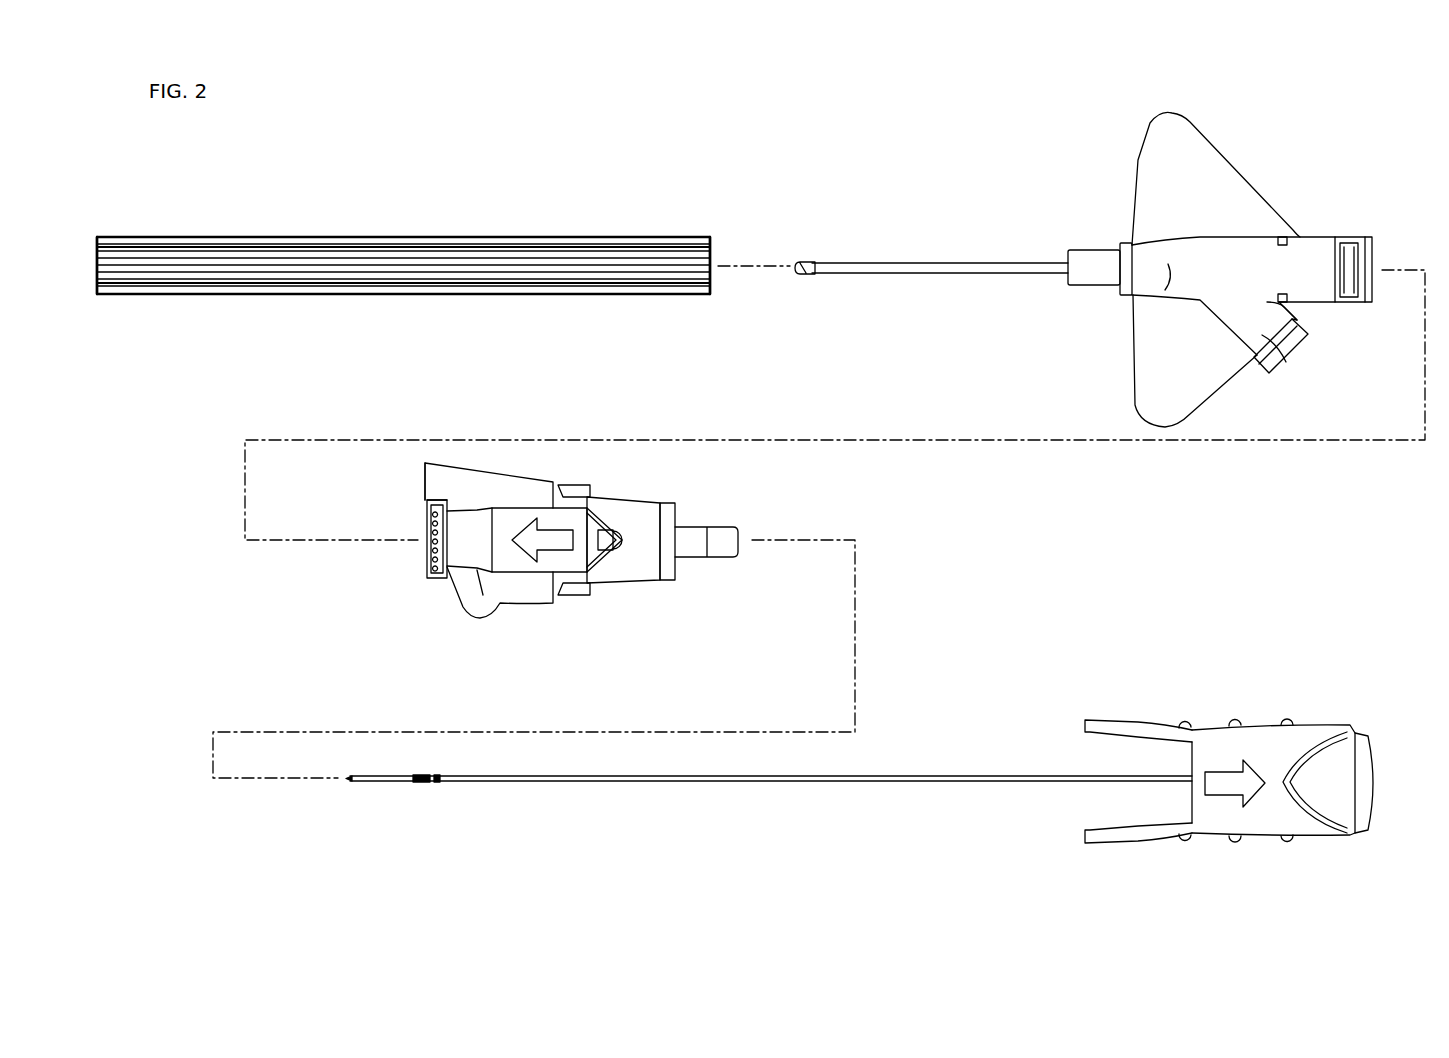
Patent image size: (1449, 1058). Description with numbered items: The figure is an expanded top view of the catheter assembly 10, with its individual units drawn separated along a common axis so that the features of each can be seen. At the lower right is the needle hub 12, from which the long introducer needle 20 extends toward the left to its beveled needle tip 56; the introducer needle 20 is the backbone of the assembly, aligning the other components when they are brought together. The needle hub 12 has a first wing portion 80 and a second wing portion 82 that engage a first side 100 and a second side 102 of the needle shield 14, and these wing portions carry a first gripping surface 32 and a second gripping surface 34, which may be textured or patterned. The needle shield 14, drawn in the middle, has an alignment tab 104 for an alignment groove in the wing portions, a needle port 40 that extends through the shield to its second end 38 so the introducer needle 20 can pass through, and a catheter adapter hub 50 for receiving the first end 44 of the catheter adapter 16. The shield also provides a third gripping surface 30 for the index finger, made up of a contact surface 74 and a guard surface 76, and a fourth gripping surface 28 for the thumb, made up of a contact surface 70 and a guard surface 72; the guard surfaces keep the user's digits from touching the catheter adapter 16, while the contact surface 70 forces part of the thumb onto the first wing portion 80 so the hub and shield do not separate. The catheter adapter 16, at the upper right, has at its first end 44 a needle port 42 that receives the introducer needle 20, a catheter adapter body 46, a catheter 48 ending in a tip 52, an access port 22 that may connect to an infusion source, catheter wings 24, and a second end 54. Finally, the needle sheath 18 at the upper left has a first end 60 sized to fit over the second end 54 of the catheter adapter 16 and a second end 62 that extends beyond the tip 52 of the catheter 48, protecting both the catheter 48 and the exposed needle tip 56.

The catheter assembly 10 is at (438, 162).
The needle hub 12 is at (1362, 699).
The needle shield 14 is at (635, 490).
The catheter adapter 16 is at (1130, 340).
The needle sheath 18 is at (190, 297).
The introducer needle 20 is at (556, 782).
The access port 22 is at (1293, 358).
The catheter wings 24 is at (1160, 135).
The fourth gripping surface 28 is at (512, 602).
The third gripping surface 30 is at (500, 470).
The first gripping surface 32 is at (1255, 838).
The second gripping surface 34 is at (1237, 726).
The second end 38 is at (427, 508).
The needle port 40 is at (722, 535).
The needle port 42 is at (1375, 252).
The first end 44 is at (1350, 237).
The catheter adapter body 46 is at (1167, 272).
The catheter 48 is at (903, 263).
The catheter adapter hub 50 is at (430, 572).
The tip 52 is at (800, 262).
The second end 54 is at (1080, 252).
The needle tip 56 is at (350, 782).
The first end 60 is at (692, 237).
The second end 62 is at (118, 238).
The contact surface 70 is at (545, 603).
The guard surface 72 is at (460, 605).
The contact surface 74 is at (462, 465).
The guard surface 76 is at (428, 470).
The first wing portion 80 is at (1108, 835).
The second wing portion 82 is at (1108, 720).
The first side 100 is at (620, 582).
The second side 102 is at (600, 495).
The alignment tab 104 is at (575, 485).